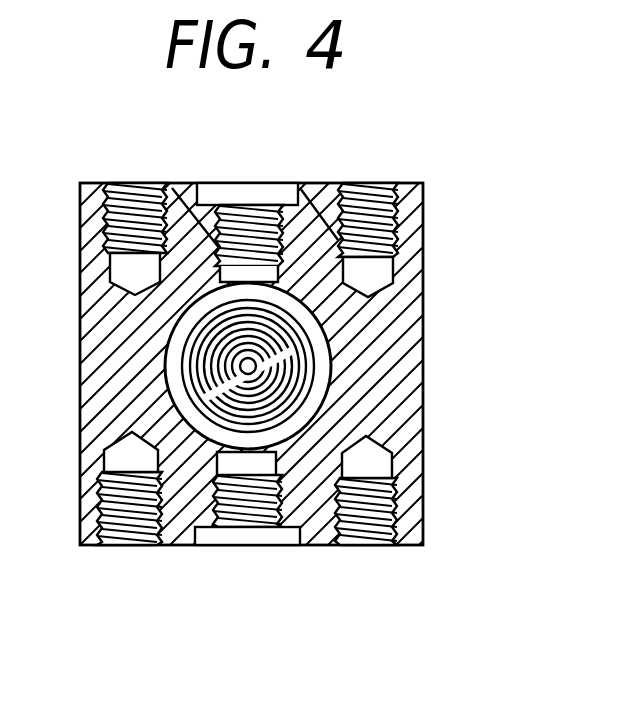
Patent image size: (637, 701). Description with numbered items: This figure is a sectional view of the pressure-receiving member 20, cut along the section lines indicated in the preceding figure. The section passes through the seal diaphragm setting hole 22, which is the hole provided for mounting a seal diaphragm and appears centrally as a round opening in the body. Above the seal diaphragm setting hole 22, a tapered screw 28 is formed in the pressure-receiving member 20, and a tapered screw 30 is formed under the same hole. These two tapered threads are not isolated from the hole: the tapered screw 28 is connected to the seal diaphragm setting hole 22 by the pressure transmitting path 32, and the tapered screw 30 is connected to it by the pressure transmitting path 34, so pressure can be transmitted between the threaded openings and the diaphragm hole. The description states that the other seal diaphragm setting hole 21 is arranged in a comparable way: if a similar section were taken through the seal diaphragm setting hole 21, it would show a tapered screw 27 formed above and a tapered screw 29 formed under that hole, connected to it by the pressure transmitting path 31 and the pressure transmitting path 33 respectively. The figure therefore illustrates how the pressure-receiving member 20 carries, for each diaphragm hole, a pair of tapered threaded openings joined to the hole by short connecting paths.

The pressure-receiving member 20 is at (407, 545).
The seal diaphragm setting hole 21 is at (254, 449).
The seal diaphragm setting hole 22 is at (312, 405).
The tapered screw 27 is at (223, 200).
The tapered screw 28 is at (233, 280).
The tapered screw 29 is at (209, 591).
The tapered screw 30 is at (227, 530).
The pressure transmitting path 31 is at (259, 201).
The pressure transmitting path 32 is at (255, 278).
The pressure transmitting path 33 is at (238, 534).
The pressure transmitting path 34 is at (242, 453).